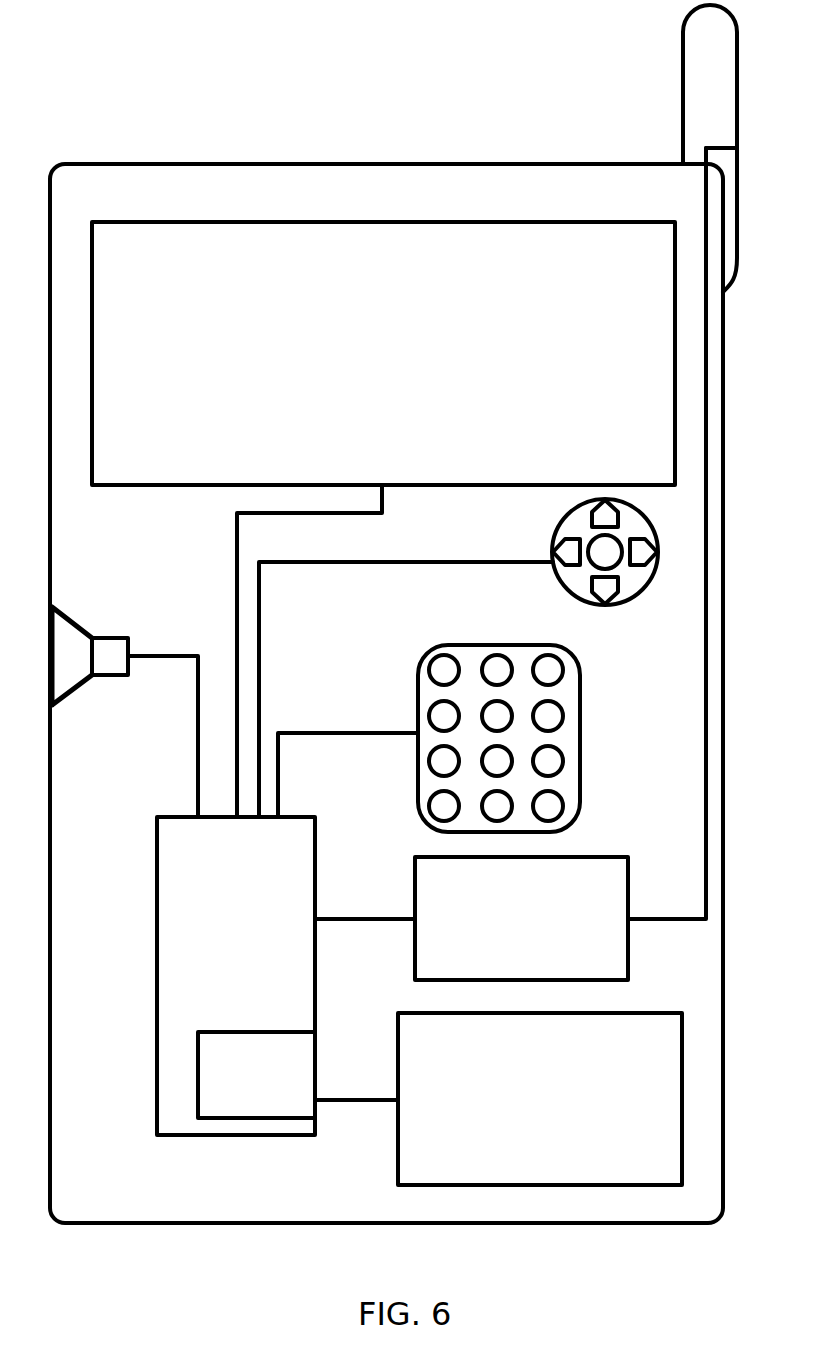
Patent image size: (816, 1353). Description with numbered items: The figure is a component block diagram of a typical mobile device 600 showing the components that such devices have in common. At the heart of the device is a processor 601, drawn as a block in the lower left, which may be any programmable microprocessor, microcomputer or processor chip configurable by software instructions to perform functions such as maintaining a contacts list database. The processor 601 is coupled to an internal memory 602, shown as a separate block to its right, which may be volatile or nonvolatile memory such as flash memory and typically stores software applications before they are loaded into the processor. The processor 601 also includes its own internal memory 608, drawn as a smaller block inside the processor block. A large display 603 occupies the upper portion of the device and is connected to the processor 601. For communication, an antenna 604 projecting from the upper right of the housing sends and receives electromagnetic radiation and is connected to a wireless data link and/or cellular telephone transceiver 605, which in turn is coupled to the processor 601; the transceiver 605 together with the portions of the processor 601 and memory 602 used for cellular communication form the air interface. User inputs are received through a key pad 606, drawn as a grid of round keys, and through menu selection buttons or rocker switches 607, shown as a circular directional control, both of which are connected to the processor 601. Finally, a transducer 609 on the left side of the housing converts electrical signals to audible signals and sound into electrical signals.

The mobile device 600 is at (338, 170).
The processor 601 is at (224, 989).
The internal memory 602 is at (517, 1112).
The display 603 is at (343, 356).
The antenna 604 is at (683, 37).
The wireless data link and/or cellular telephone transceiver 605 is at (499, 932).
The key pad 606 is at (580, 730).
The menu selection buttons or rocker switches 607 is at (611, 604).
The internal memory 608 is at (234, 1087).
The transducer 609 is at (96, 637).